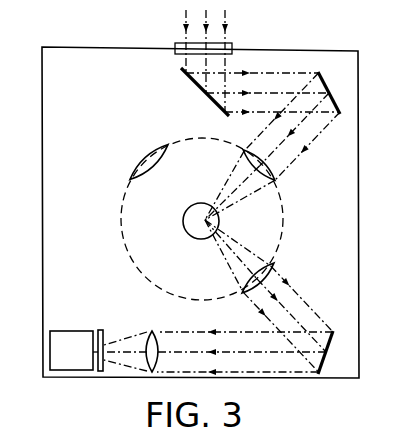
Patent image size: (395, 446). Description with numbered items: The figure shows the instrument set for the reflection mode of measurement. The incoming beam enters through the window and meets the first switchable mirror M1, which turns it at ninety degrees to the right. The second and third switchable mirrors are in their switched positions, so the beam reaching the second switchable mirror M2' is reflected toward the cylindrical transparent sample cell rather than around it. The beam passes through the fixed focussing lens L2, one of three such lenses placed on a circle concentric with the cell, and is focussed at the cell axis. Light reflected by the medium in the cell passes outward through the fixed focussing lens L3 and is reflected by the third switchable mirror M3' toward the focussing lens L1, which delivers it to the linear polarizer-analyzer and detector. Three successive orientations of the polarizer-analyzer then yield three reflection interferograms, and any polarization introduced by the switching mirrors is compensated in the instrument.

The first switchable mirror M1 is at (203, 94).
The second switchable mirror in switched position M2' is at (336, 90).
The focussing lens L2 is at (273, 177).
The focussing lens L3 is at (275, 274).
The third switchable mirror in switched position M3' is at (336, 356).
The focussing lens L1 is at (139, 338).